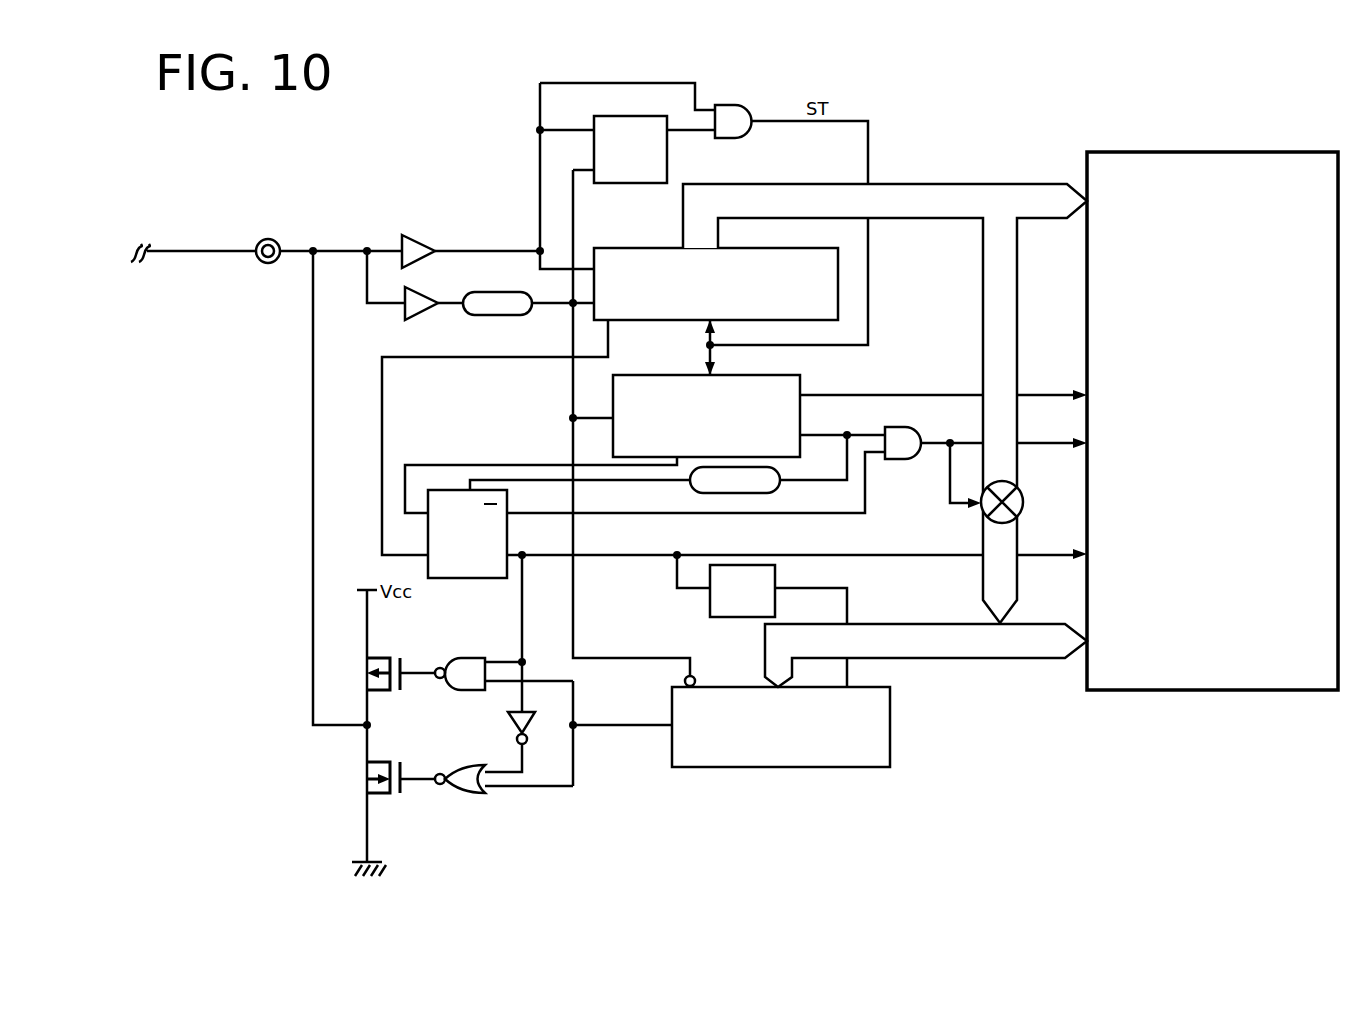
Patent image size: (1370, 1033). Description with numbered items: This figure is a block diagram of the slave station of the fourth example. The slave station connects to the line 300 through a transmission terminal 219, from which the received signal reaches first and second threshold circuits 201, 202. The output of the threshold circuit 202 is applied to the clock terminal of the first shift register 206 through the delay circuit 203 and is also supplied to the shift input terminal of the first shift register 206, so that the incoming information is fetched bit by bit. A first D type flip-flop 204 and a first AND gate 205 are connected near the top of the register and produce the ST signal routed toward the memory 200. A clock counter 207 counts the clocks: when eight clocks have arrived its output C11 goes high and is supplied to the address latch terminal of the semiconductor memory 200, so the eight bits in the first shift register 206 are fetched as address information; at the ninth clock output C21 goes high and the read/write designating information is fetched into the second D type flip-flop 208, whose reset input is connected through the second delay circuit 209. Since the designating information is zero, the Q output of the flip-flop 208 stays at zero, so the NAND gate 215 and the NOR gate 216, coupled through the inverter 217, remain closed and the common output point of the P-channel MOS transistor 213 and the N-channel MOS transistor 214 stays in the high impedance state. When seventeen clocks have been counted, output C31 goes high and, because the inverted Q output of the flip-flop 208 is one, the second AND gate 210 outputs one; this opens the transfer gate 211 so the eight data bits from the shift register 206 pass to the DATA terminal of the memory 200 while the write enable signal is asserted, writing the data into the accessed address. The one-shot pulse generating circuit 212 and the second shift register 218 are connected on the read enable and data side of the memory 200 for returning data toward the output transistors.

The semiconductor memory 200 is at (1220, 152).
The first threshold circuit 201 is at (422, 240).
The second threshold circuit 202 is at (419, 316).
The first delay circuit 203 is at (498, 316).
The first D type flip-flop 204 is at (623, 116).
The first AND gate 205 is at (731, 105).
The first shift register 206 is at (838, 280).
The clock counter 207 is at (773, 372).
The second D type flip-flop 208 is at (448, 490).
The second delay circuit 209 is at (745, 493).
The second AND gate 210 is at (900, 427).
The transfer gate 211 is at (1021, 493).
The one-shot pulse generating circuit 212 is at (775, 590).
The P-channel MOS transistor 213 is at (395, 658).
The N-channel MOS transistor 214 is at (395, 793).
The NAND gate 215 is at (467, 658).
The NOR gate 216 is at (465, 795).
The inverter 217 is at (508, 724).
The second shift register 218 is at (785, 767).
The transmission terminal 219 is at (277, 241).
The signal line 300 is at (205, 248).